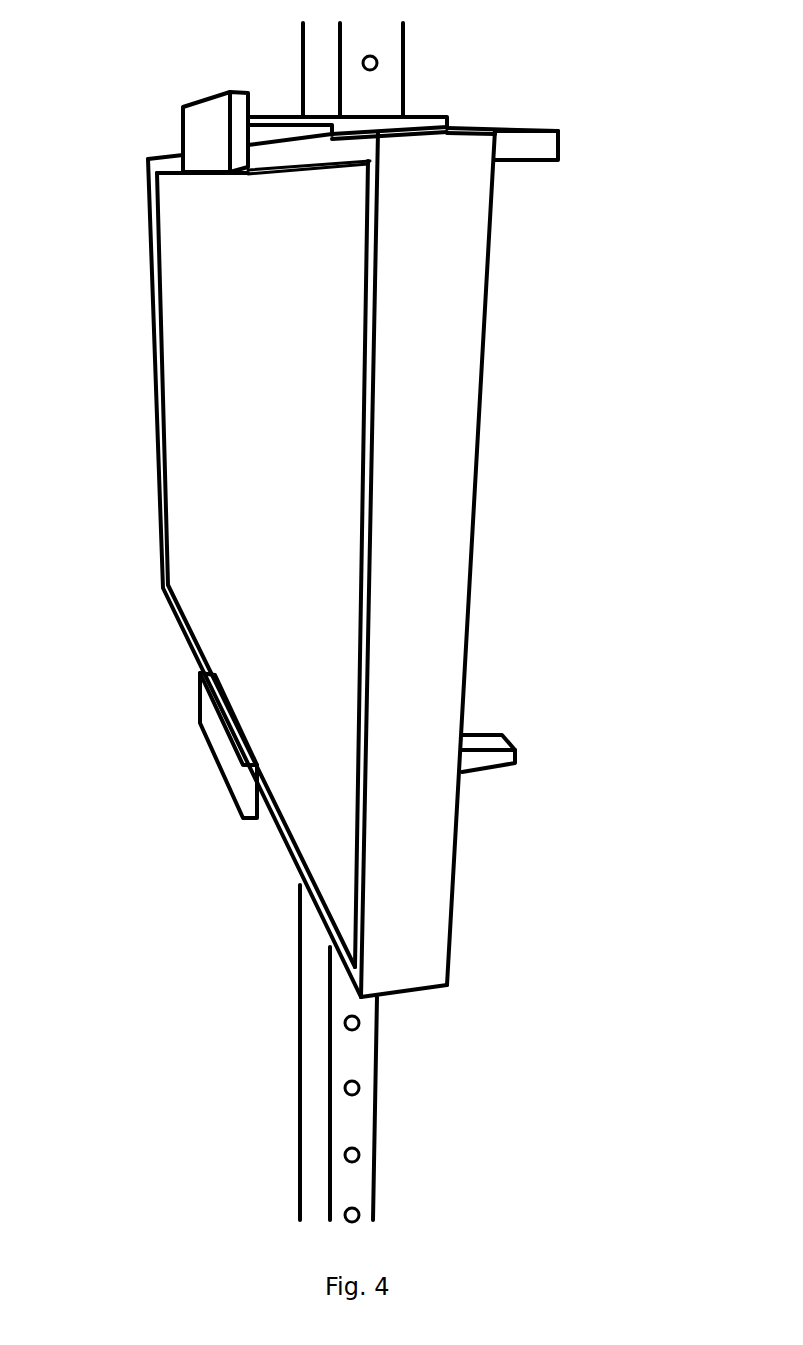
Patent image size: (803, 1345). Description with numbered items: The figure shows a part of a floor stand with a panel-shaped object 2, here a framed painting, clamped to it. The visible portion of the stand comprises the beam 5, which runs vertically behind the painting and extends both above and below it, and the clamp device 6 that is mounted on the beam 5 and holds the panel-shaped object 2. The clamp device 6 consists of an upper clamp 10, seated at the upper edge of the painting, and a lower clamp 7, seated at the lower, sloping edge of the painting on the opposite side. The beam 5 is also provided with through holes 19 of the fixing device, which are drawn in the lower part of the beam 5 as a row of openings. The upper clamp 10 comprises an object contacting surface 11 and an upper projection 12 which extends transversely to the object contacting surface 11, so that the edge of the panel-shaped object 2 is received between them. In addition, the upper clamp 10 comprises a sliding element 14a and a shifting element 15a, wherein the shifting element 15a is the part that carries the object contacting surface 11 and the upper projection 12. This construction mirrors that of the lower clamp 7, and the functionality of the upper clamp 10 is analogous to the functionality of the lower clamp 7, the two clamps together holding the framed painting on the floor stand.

The panel-shaped object 2 is at (256, 452).
The beam 5 is at (393, 88).
The clamp device 6 is at (503, 182).
The lower clamp 7 is at (230, 823).
The upper clamp 10 is at (180, 87).
The object contacting surface 11 is at (280, 143).
The upper projection 12 is at (251, 158).
The sliding element 14a is at (413, 125).
The shifting element 15a is at (543, 147).
The through holes 19 is at (357, 1092).